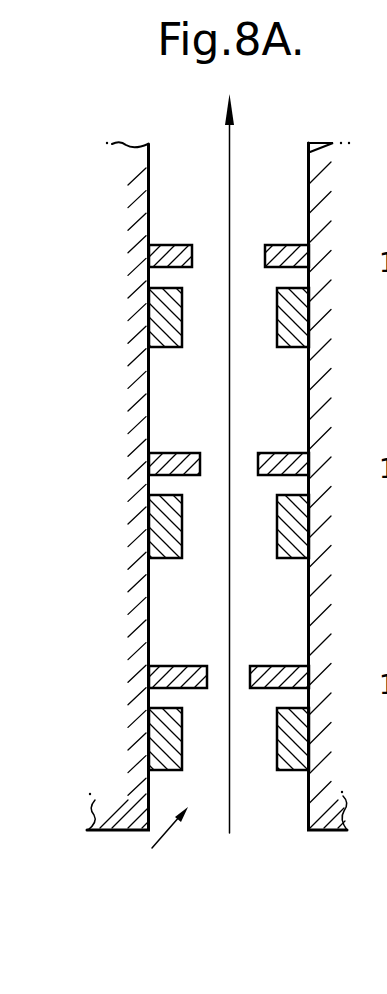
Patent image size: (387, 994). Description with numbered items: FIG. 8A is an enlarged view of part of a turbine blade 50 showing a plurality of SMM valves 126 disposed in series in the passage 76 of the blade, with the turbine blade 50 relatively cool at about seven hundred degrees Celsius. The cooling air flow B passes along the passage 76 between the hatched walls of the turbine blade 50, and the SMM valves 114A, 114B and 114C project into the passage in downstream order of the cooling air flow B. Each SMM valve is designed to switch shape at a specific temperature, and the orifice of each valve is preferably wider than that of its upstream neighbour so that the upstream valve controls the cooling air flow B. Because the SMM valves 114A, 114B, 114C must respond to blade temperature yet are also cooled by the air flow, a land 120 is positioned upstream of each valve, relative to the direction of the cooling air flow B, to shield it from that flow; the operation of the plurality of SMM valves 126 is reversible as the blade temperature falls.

The SMM valve 114A is at (157, 675).
The SMM valve 114B is at (152, 462).
The SMM valve 114C is at (148, 250).
The land 120 is at (158, 320).
The passage 76 is at (274, 150).
The turbine blade 50 is at (332, 832).
The plurality of SMM valves 126 is at (156, 845).
The cooling air flow B is at (227, 145).